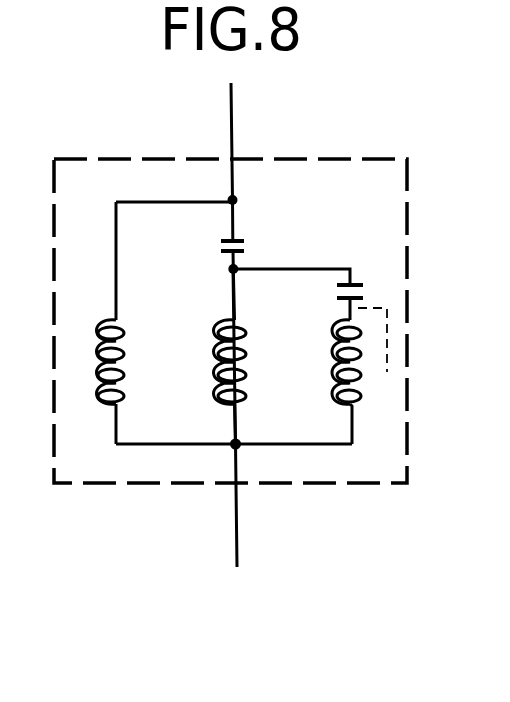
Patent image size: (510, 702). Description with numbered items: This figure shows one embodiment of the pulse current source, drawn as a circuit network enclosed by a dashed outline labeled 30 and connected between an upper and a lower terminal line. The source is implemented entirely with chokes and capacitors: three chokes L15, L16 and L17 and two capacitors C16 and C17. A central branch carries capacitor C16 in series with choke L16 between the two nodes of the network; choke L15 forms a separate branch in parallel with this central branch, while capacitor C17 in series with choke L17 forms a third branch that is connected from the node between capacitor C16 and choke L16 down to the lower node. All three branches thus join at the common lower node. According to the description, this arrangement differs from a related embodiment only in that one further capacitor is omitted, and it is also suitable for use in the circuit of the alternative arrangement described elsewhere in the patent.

The filter network (dashed enclosure) 30 is at (103, 159).
The capacitor C16 is at (238, 236).
The capacitor C17 is at (392, 262).
The choke L15 is at (125, 352).
The choke L16 is at (247, 347).
The choke L17 is at (335, 372).